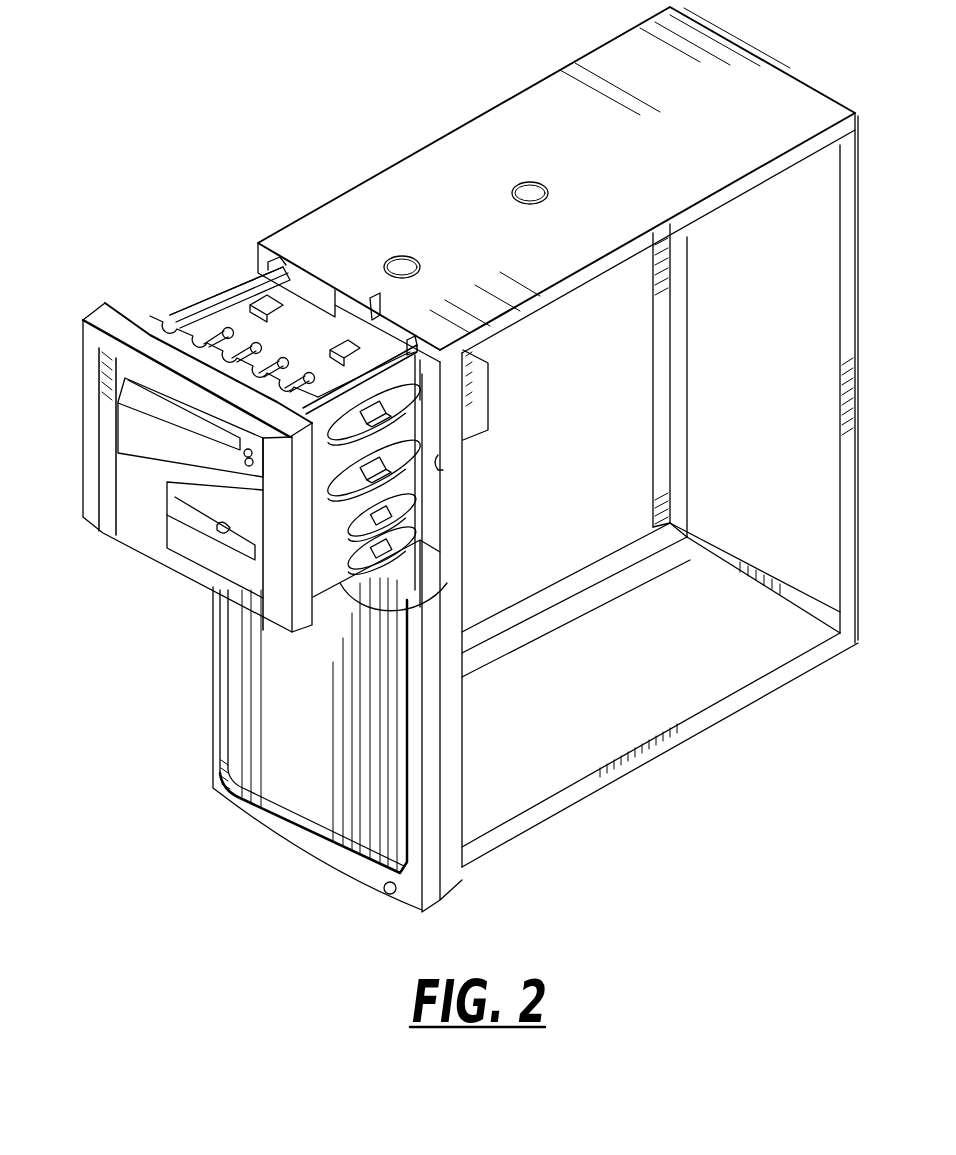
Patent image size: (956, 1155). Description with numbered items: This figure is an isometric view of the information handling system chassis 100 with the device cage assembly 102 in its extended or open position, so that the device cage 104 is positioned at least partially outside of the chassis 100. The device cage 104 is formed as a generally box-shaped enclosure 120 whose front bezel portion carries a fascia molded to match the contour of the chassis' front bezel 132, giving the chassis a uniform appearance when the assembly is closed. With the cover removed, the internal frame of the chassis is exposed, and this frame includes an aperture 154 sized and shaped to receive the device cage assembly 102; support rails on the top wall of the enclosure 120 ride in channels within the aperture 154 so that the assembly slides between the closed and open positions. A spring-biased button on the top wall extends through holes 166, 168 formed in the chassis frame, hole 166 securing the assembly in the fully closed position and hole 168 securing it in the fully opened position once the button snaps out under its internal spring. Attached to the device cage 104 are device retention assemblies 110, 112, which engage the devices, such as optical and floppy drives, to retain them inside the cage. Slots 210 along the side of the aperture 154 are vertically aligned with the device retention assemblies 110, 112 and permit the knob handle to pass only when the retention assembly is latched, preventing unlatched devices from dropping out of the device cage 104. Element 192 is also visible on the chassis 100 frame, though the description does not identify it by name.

The information handling system chassis 100 is at (318, 142).
The device cage assembly 102 is at (178, 565).
The device cage 104 is at (340, 583).
The device retention assembly 110 is at (408, 442).
The device retention assembly 112 is at (400, 540).
The enclosure 120 is at (240, 323).
The front bezel 132 is at (323, 734).
The aperture 154 is at (342, 306).
The hole 166 is at (546, 191).
The hole 168 is at (420, 267).
The chassis frame top rail 192 is at (738, 192).
The slot 210 is at (440, 466).